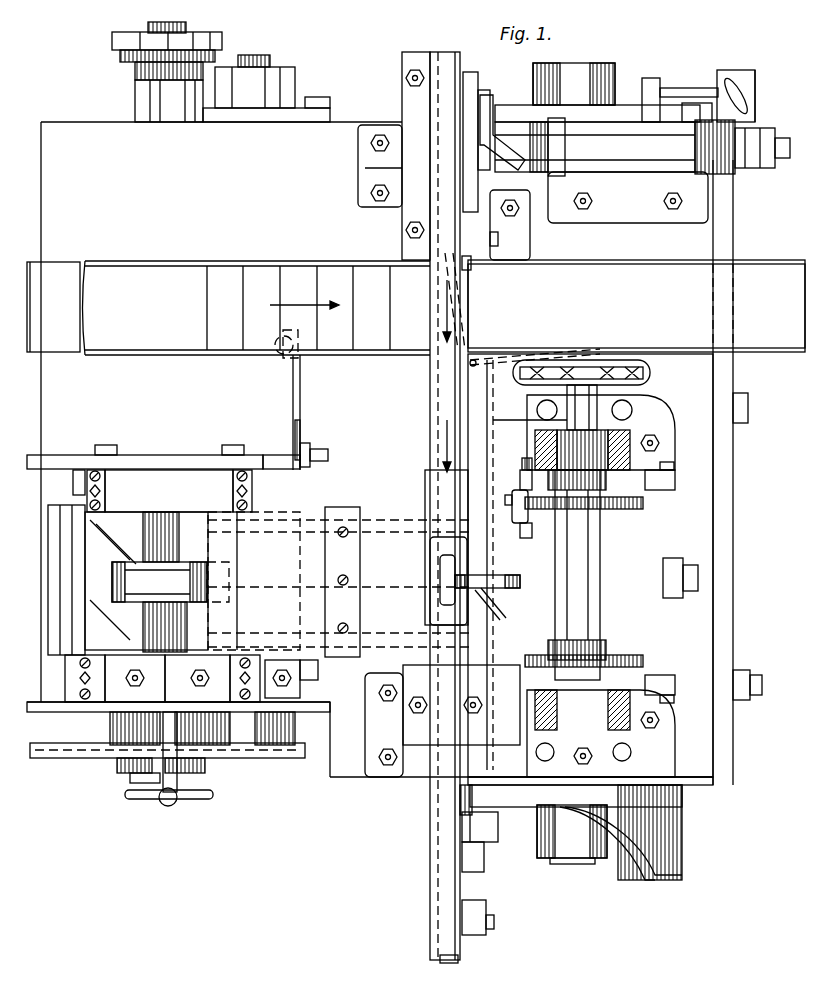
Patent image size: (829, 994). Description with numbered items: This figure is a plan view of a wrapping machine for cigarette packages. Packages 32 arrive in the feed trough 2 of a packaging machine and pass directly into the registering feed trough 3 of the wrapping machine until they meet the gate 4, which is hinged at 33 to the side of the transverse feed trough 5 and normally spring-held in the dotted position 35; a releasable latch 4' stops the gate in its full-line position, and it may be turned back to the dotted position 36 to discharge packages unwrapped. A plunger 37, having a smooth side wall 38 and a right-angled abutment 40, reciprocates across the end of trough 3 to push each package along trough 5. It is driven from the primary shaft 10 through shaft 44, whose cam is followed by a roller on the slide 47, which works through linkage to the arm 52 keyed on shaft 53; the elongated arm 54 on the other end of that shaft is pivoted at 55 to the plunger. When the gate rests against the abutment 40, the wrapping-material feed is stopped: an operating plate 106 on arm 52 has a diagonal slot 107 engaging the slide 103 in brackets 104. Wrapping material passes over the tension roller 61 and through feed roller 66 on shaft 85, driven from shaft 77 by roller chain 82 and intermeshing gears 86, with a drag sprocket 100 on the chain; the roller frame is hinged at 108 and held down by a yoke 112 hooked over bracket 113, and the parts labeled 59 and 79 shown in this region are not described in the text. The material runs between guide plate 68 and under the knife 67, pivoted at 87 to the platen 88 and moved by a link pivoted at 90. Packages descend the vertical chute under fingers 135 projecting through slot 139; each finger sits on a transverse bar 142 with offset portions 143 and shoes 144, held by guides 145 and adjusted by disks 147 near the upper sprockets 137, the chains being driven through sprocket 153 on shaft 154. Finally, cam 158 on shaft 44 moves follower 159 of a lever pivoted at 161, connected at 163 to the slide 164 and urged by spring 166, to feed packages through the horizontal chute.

The feed trough 2 is at (50, 294).
The feed trough 3 is at (118, 274).
The gate 4 is at (636, 306).
The releasable latch 4' is at (480, 273).
The feed trough 5 is at (430, 416).
The shaft 10 is at (268, 61).
The cigarette packages 32 is at (222, 274).
The hinge 33 is at (470, 366).
The dotted-line gate position 35 is at (448, 284).
The dotted-line gate position 36 is at (510, 357).
The plunger 37 is at (438, 118).
The side wall 38 is at (425, 207).
The abutment 40 is at (482, 258).
The shaft 44 is at (588, 864).
The slide 47 is at (735, 461).
The arm or link 52 is at (760, 176).
The shaft 53 is at (645, 172).
The elongated arm 54 is at (497, 108).
The pivot 55 is at (489, 98).
The gear housing 59 is at (120, 530).
The tension roller 61 is at (60, 520).
The feed roller 66 is at (122, 565).
The knife blade 67 is at (305, 514).
The guide plate 68 is at (367, 520).
The shaft 77 is at (148, 27).
The flange 79 is at (112, 41).
The roller chain 82 is at (253, 758).
The shaft 85 is at (160, 545).
The intermeshing gears 86 is at (118, 746).
The knife pivot 87 is at (312, 445).
The platen 88 is at (303, 666).
The link pivot 90 is at (283, 355).
The drag sprocket 100 is at (68, 760).
The slide 103 is at (683, 84).
The brackets 104 is at (650, 78).
The operating plate 106 is at (755, 80).
The diagonal slot 107 is at (731, 80).
The hinge 108 is at (80, 470).
The yoke 112 is at (196, 800).
The bracket 113 is at (168, 807).
The feeding plungers or fingers 135 is at (455, 573).
The sprockets 137 is at (645, 503).
The slot 139 is at (493, 601).
The transverse bar 142 is at (560, 546).
The offset portion 143 is at (512, 500).
The shoes 144 is at (525, 470).
The guides 145 is at (524, 464).
The guide disks 147 is at (673, 480).
The sprocket 153 is at (651, 373).
The shaft 154 is at (570, 401).
The cam 158 is at (675, 831).
The follower or roller 159 is at (488, 856).
The lever pivot 161 is at (485, 886).
The slotted pivot 163 is at (493, 921).
The slide 164 is at (450, 950).
The spring 166 is at (462, 791).